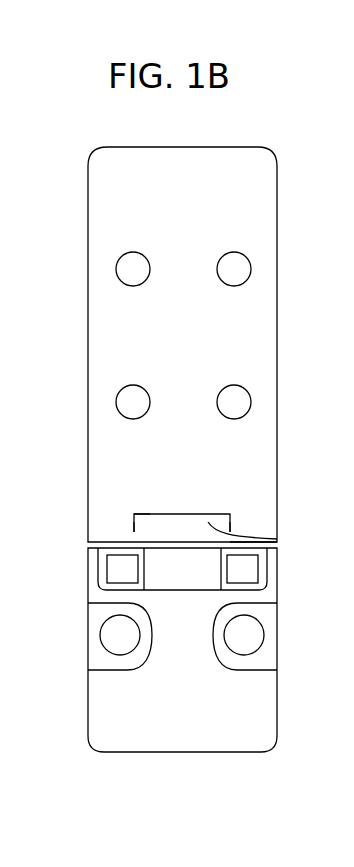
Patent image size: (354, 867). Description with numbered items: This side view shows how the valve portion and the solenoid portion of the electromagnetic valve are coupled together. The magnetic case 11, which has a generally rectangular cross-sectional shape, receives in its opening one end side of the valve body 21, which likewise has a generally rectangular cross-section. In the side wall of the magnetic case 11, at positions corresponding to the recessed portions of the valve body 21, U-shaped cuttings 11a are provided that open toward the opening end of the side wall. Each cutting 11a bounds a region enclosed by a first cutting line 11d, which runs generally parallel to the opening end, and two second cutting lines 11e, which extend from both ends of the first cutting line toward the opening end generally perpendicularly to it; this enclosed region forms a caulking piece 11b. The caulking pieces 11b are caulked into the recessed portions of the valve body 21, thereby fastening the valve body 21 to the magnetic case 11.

The magnetic case 11 is at (257, 204).
The U-shaped cutting 11a is at (223, 513).
The caulking piece 11b is at (277, 539).
The first cutting line 11d is at (149, 513).
The second cutting line 11e is at (135, 523).
The valve body 21 is at (240, 730).